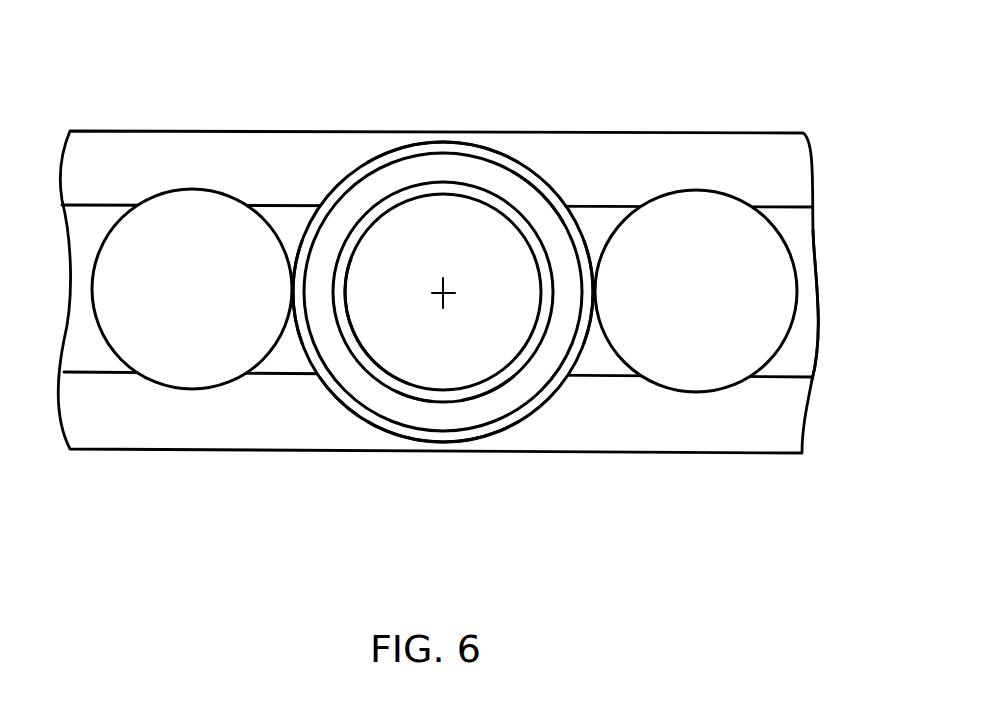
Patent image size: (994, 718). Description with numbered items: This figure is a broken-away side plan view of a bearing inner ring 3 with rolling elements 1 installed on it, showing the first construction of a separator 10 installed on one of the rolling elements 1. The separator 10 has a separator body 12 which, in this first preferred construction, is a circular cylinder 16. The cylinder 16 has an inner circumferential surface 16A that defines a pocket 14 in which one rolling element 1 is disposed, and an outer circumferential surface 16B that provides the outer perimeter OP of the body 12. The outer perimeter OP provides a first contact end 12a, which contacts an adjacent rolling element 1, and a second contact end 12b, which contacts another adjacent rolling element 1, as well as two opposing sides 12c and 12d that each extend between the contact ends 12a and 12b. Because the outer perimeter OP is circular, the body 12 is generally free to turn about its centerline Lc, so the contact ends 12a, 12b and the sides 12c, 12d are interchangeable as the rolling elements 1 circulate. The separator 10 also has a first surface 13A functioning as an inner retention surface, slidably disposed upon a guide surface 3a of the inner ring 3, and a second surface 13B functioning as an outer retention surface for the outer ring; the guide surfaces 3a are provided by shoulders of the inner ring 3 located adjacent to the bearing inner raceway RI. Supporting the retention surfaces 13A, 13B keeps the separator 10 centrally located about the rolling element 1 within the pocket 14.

The separator 10 is at (472, 291).
The separator body 12 is at (440, 286).
The first contact end 12a is at (292, 292).
The second contact end 12b is at (597, 293).
The side 12c is at (443, 440).
The side 12d is at (442, 144).
The rolling element 1 is at (185, 190).
The inner ring 3 is at (782, 455).
The guide surface 3a is at (738, 155).
The bearing inner raceway RI is at (795, 222).
The circular cylinder 16 is at (501, 355).
The inner circumferential surface 16A is at (352, 272).
The outer circumferential surface 16B is at (558, 192).
The first surface 13A is at (503, 402).
The second surface 13B is at (413, 420).
The pocket 14 is at (380, 356).
The outer perimeter OP is at (320, 397).
The centerline Lc is at (446, 296).